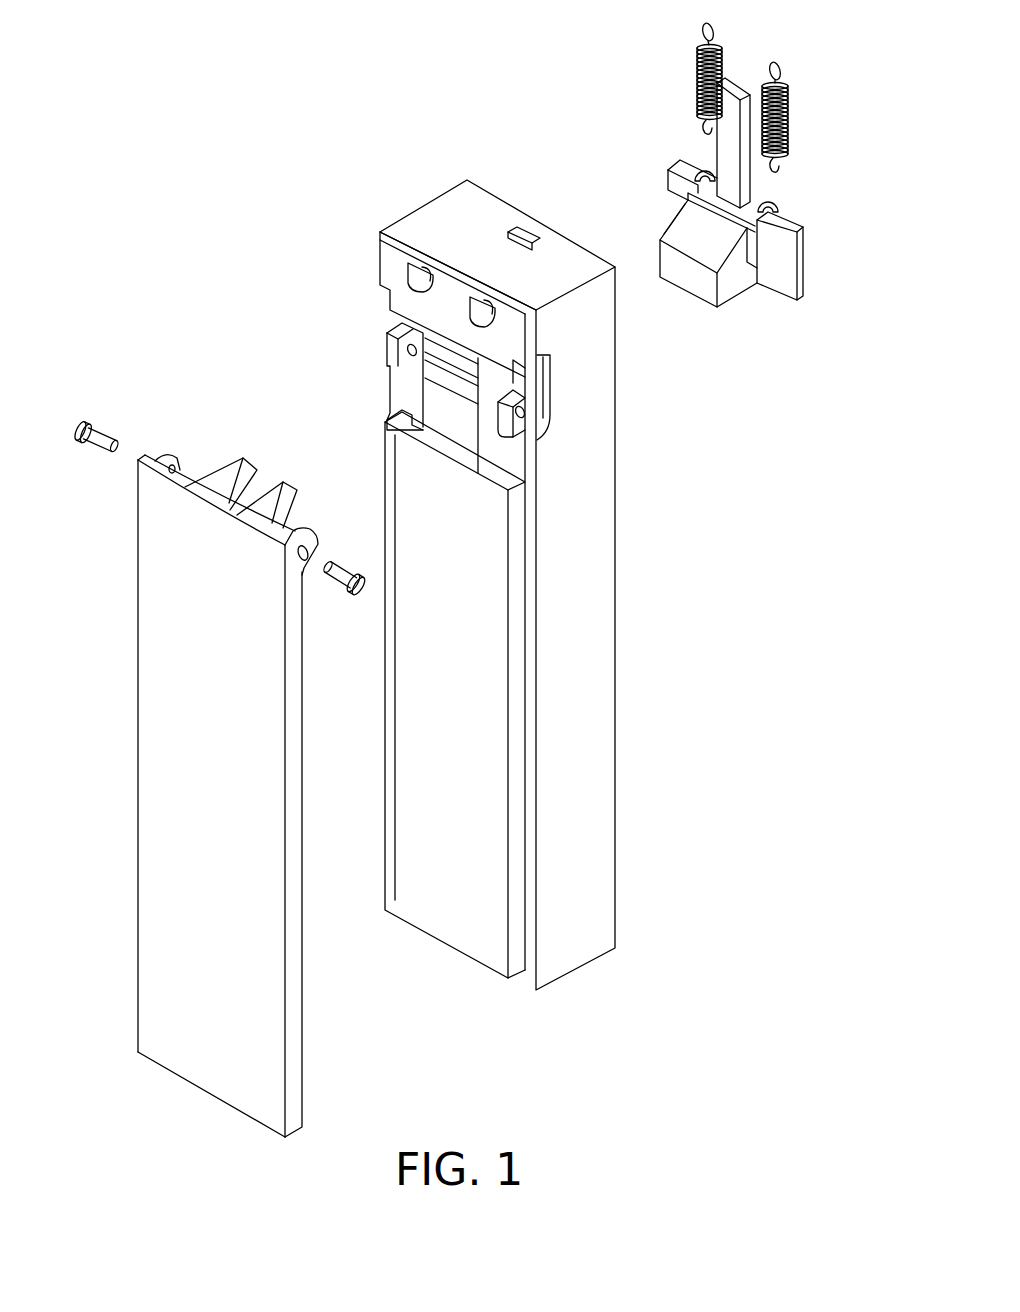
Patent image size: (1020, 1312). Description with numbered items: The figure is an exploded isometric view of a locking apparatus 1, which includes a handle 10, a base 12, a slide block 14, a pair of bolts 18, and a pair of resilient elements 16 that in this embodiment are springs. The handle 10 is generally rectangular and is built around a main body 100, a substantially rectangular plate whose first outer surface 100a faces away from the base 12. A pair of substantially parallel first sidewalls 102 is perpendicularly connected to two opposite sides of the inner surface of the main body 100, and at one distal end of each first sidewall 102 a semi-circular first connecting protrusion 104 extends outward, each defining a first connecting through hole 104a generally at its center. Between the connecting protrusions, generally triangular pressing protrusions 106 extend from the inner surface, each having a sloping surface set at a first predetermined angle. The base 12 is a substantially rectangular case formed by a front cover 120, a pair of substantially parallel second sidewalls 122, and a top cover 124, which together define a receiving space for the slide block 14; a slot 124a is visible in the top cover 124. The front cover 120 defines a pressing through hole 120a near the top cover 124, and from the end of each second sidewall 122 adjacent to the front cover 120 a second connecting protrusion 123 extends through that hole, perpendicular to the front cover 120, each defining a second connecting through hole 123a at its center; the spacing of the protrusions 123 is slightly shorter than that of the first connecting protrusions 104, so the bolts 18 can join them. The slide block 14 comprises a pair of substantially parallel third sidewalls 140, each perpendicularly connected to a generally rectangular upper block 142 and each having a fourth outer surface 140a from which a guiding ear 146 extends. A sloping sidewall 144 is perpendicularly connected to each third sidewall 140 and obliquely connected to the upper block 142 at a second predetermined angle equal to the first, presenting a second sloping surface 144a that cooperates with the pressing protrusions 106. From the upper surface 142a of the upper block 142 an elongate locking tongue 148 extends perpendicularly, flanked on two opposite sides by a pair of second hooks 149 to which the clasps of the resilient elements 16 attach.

The locking apparatus 1 is at (362, 46).
The handle 10 is at (128, 966).
The main body 100 is at (265, 1010).
The first outer surface 100a is at (165, 692).
The first sidewall 102 is at (295, 1105).
The first connecting protrusion 104 is at (322, 535).
The first connecting through hole 104a is at (305, 566).
The pressing protrusion 106 is at (223, 463).
The bolt 18 is at (100, 432).
The base 12 is at (645, 870).
The front cover 120 is at (455, 925).
The pressing through hole 120a is at (498, 453).
The second sidewall 122 is at (583, 667).
The second connecting protrusion 123 is at (402, 370).
The second connecting through hole 123a is at (404, 358).
The top cover 124 is at (418, 225).
The slot 124a is at (525, 222).
The slide block 14 is at (713, 323).
The resilient element 16 is at (696, 56).
The locking tongue 148 is at (736, 88).
The guiding ear 146 is at (702, 200).
The upper block 142 is at (678, 175).
The upper surface 142a is at (760, 224).
The second hook 149 is at (771, 201).
The sloping sidewall 144 is at (708, 266).
The second sloping surface 144a is at (667, 221).
The third sidewall 140 is at (728, 290).
The fourth outer surface 140a is at (748, 272).